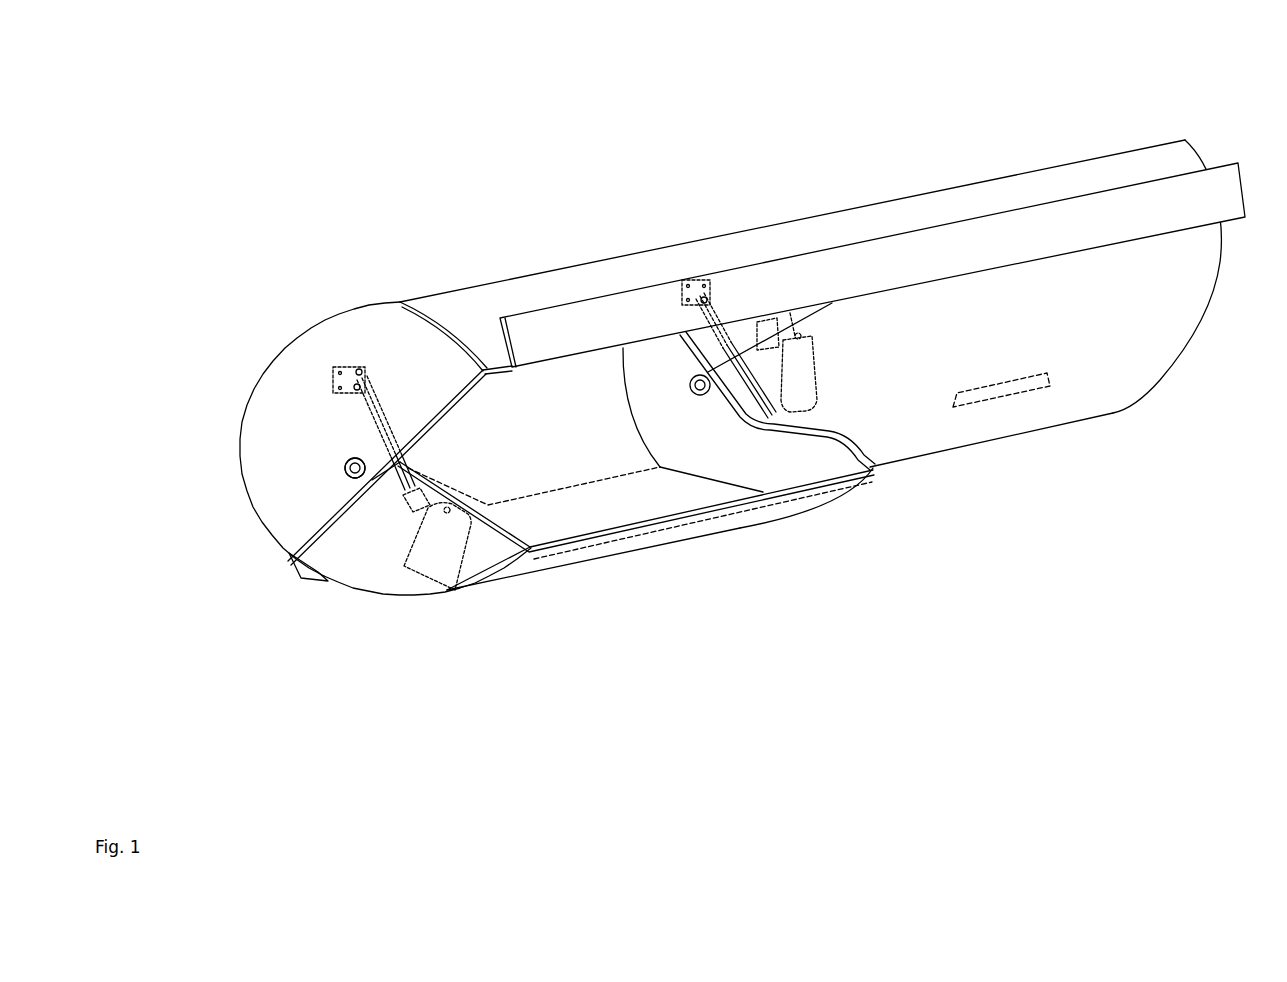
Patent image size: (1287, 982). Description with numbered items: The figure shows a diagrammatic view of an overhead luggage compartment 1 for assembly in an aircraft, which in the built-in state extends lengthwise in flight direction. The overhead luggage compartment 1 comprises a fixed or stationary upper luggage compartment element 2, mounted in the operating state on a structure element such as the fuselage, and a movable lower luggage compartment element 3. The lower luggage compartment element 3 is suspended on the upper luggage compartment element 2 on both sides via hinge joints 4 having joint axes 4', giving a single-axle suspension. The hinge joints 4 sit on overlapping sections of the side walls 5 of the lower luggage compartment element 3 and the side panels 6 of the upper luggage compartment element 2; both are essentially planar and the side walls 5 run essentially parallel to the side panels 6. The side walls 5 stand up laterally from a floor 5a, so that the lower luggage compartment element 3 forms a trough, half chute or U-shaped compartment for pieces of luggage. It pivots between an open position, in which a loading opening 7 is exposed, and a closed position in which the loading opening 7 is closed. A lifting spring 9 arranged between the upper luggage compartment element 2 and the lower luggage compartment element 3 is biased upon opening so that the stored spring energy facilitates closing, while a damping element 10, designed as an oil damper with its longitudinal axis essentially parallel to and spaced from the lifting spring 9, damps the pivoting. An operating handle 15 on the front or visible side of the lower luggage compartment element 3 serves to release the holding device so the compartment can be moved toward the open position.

The overhead luggage compartment 1 is at (367, 159).
The upper luggage compartment element 2 is at (299, 386).
The lower luggage compartment element 3 is at (1015, 498).
The hinge joint 4 is at (297, 548).
The joint axis 4' is at (454, 521).
The side wall 5 is at (353, 547).
The floor 5a is at (365, 592).
The side panel 6 is at (428, 342).
The loading opening 7 is at (622, 485).
The lifting spring 9 is at (410, 487).
The damping element 10 is at (397, 468).
The operating handle 15 is at (1030, 386).